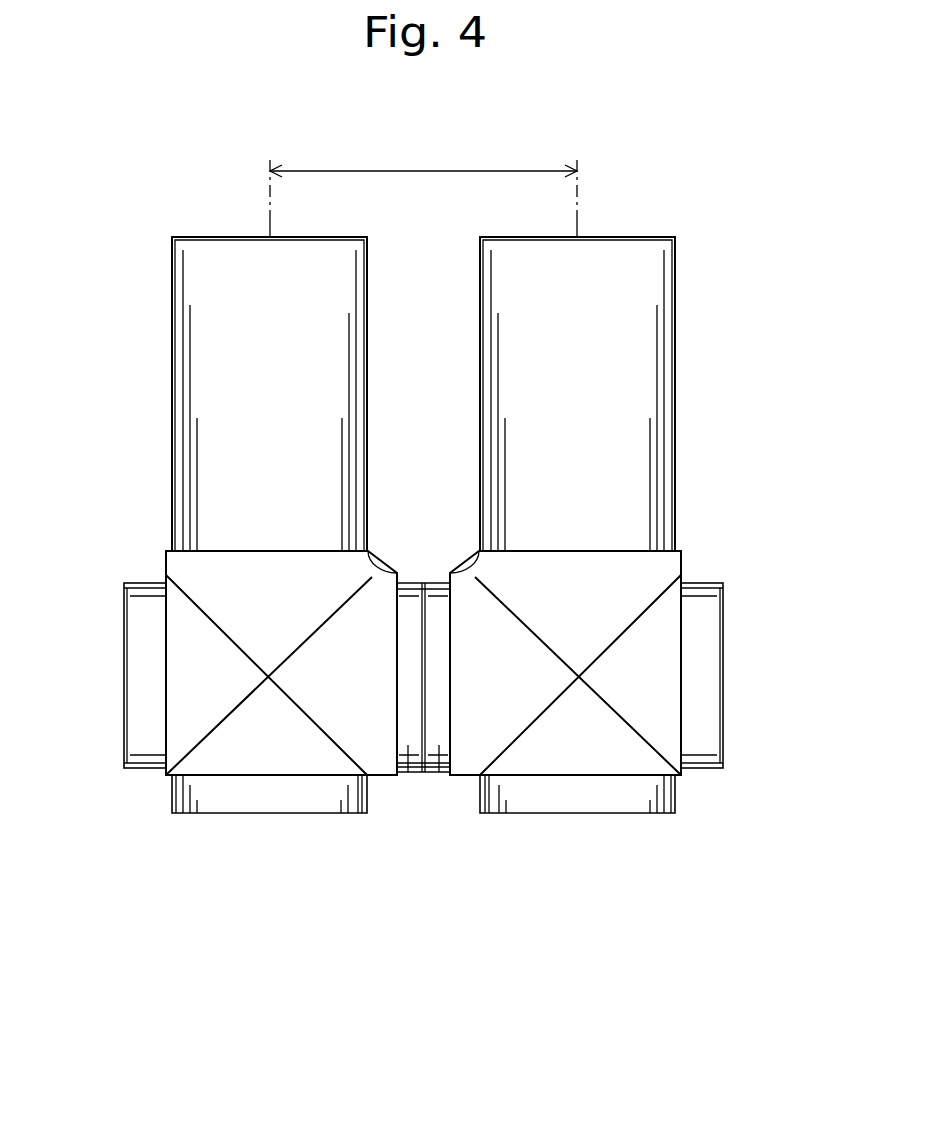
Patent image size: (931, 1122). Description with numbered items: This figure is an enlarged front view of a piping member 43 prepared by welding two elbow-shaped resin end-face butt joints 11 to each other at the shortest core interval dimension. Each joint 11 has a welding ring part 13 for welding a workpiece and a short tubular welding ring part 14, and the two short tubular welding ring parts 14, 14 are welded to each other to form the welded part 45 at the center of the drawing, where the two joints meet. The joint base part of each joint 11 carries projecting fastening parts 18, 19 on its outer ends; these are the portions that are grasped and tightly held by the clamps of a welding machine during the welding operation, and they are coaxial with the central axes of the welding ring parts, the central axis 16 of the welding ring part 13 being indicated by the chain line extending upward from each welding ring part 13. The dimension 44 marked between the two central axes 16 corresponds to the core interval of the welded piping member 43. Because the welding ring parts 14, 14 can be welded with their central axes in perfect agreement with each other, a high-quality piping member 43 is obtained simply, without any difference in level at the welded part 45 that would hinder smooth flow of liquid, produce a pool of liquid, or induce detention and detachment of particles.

The joint 11 is at (143, 522).
The welding ring part 13 is at (215, 288).
The short tubular welding ring part 14 is at (408, 772).
The central axis 16 is at (270, 210).
The projecting fastening part 18 is at (208, 800).
The projecting fastening part 19 is at (145, 652).
The piping member 43 is at (416, 787).
The pitch 44 is at (421, 171).
The welded part 45 is at (423, 772).